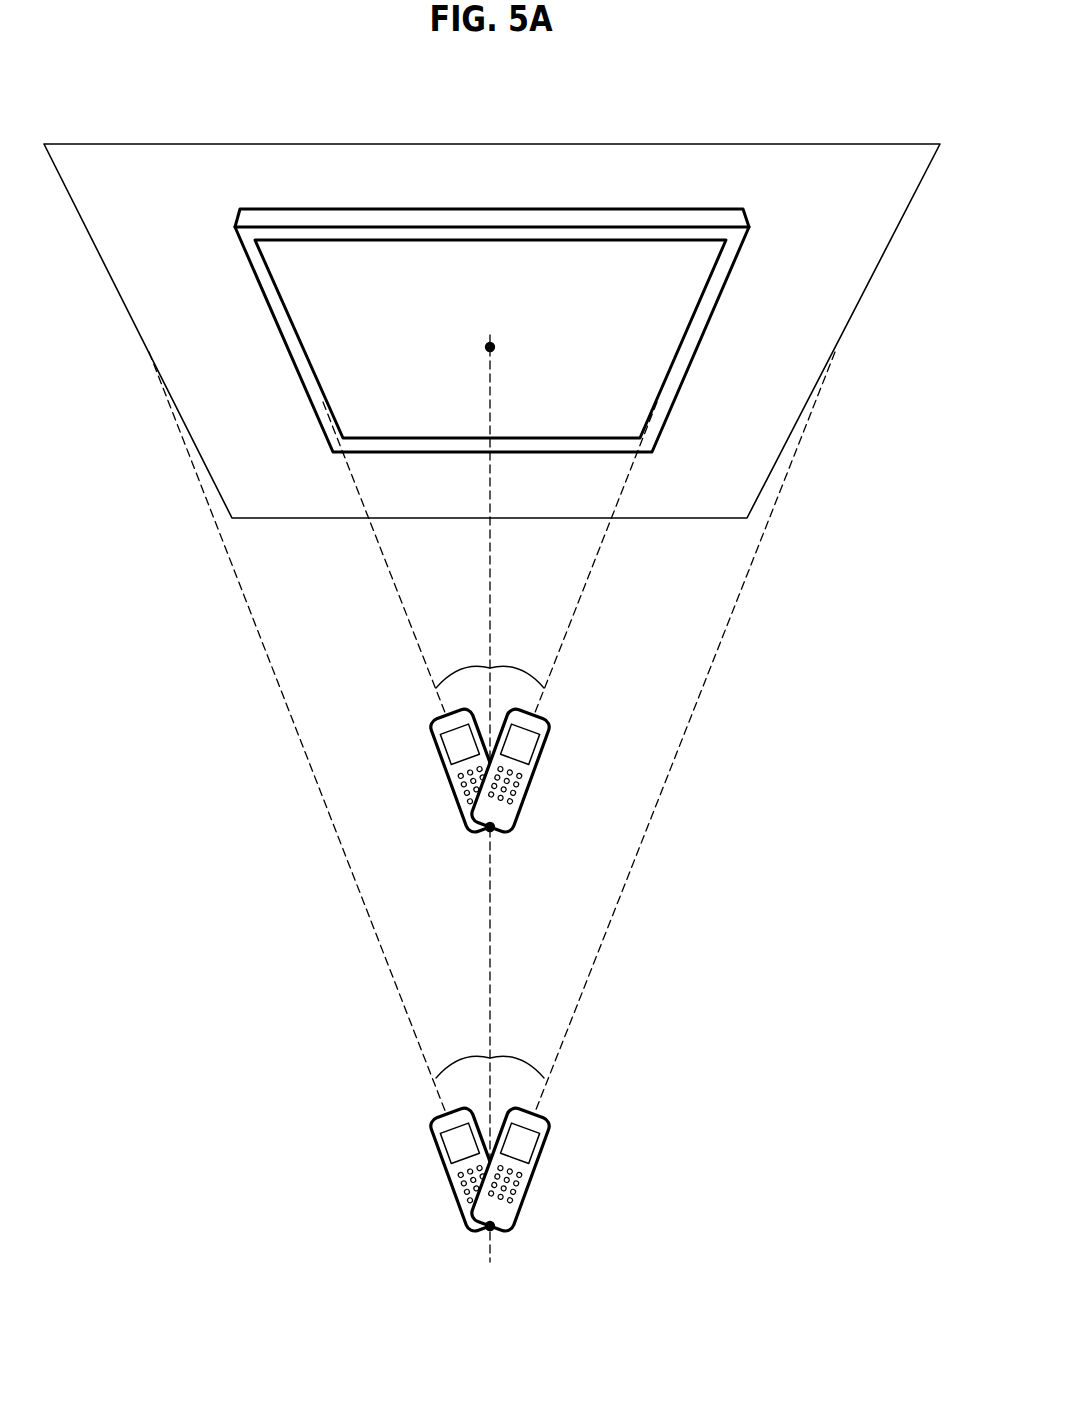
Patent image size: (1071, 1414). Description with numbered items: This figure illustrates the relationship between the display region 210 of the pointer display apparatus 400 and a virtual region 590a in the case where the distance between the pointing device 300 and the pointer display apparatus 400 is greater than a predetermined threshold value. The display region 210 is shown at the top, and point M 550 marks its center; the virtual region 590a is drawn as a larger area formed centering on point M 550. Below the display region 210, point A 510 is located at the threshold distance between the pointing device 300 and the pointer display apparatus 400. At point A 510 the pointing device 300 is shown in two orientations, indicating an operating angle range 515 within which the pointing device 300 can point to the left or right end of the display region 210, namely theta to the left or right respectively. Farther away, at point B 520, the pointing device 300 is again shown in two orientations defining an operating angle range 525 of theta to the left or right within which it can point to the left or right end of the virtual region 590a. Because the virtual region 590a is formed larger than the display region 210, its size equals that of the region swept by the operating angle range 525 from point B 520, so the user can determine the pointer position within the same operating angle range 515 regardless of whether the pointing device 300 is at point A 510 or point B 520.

The virtual region 590a is at (640, 143).
The pointer display apparatus 400 is at (692, 350).
The display region 210 is at (492, 258).
The point M 550 is at (490, 334).
The operating angle range 515 is at (508, 628).
The operating angle range 525 is at (508, 1018).
The pointing device 300 is at (533, 777).
The point A 510 is at (497, 828).
The point B 520 is at (497, 1227).